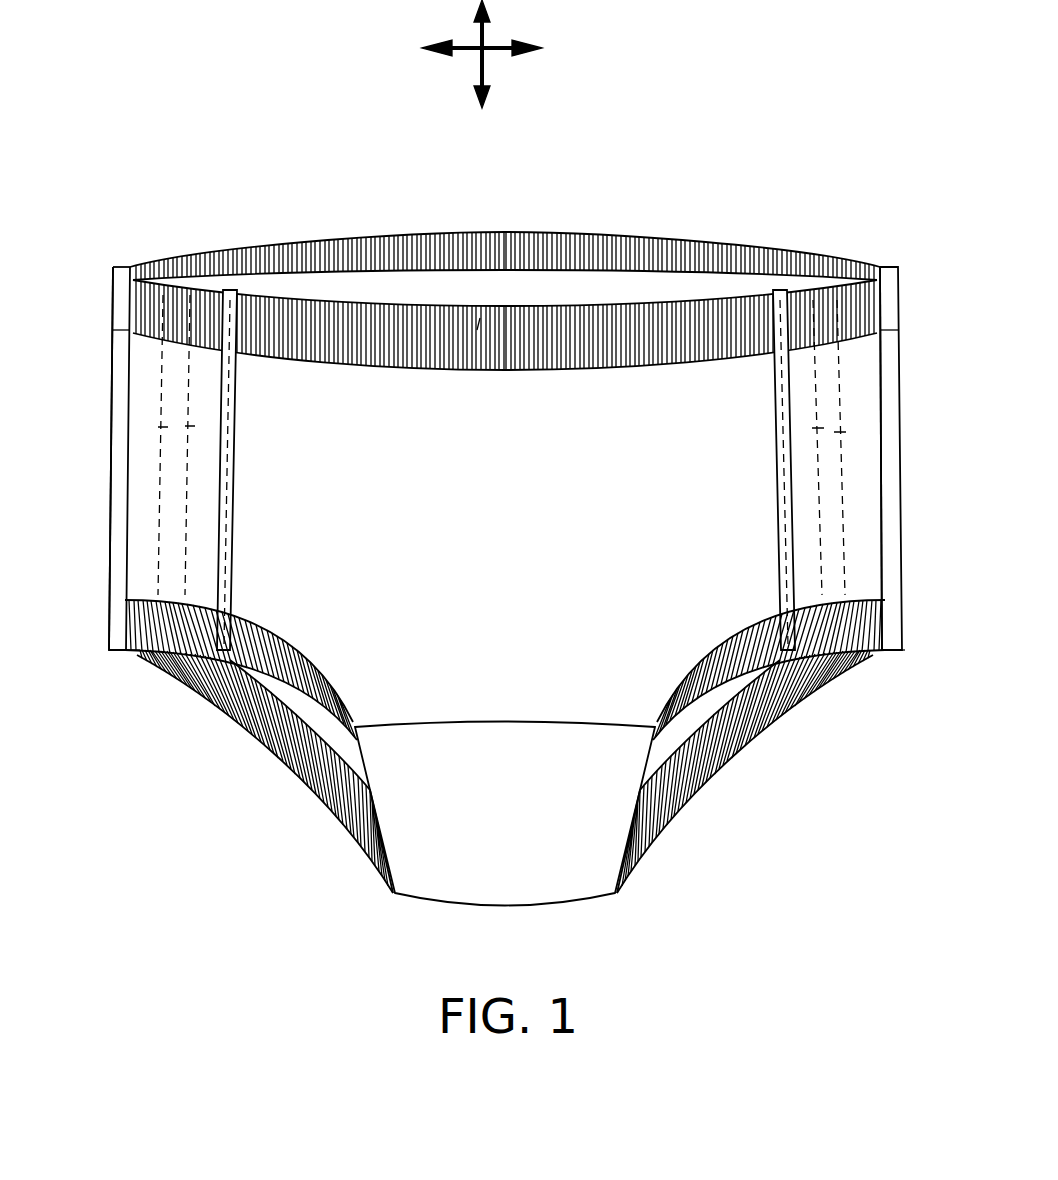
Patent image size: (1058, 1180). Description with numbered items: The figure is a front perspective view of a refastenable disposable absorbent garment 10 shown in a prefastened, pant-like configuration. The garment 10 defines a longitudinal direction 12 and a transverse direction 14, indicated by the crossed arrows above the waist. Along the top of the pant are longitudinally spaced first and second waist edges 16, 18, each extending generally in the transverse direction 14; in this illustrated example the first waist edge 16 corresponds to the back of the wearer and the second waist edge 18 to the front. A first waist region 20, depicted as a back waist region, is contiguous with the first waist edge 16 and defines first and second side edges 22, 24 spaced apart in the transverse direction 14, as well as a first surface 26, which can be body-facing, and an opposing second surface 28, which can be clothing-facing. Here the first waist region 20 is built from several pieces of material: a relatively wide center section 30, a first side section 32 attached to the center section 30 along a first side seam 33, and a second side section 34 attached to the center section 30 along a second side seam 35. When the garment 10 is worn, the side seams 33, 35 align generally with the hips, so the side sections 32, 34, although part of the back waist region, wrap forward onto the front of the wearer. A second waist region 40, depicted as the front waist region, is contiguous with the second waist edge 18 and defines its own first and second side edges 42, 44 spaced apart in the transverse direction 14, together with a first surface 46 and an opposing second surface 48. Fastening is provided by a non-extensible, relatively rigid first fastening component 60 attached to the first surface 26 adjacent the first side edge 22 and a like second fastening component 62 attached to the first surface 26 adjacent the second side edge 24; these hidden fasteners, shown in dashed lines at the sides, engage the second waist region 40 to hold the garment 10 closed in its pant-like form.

The refastenable disposable absorbent garment 10 is at (220, 108).
The longitudinal direction 12 is at (480, 27).
The transverse direction 14 is at (487, 52).
The first waist edge 16 is at (542, 277).
The second waist edge 18 is at (544, 279).
The first waist region 20 is at (505, 234).
The first side edge 22 is at (795, 547).
The second side edge 24 is at (223, 530).
The first surface 26 is at (294, 235).
The second surface 28 is at (503, 432).
The center section 30 is at (735, 237).
The first side section 32 is at (853, 303).
The first side seam 33 is at (888, 400).
The second side section 34 is at (137, 267).
The second side seam 35 is at (118, 463).
The second waist region 40 is at (393, 425).
The first side edge 42 is at (842, 517).
The second side edge 44 is at (160, 512).
The first surface 46 is at (487, 303).
The second surface 48 is at (594, 511).
The first fastening component 60 is at (840, 430).
The second fastening component 62 is at (193, 428).